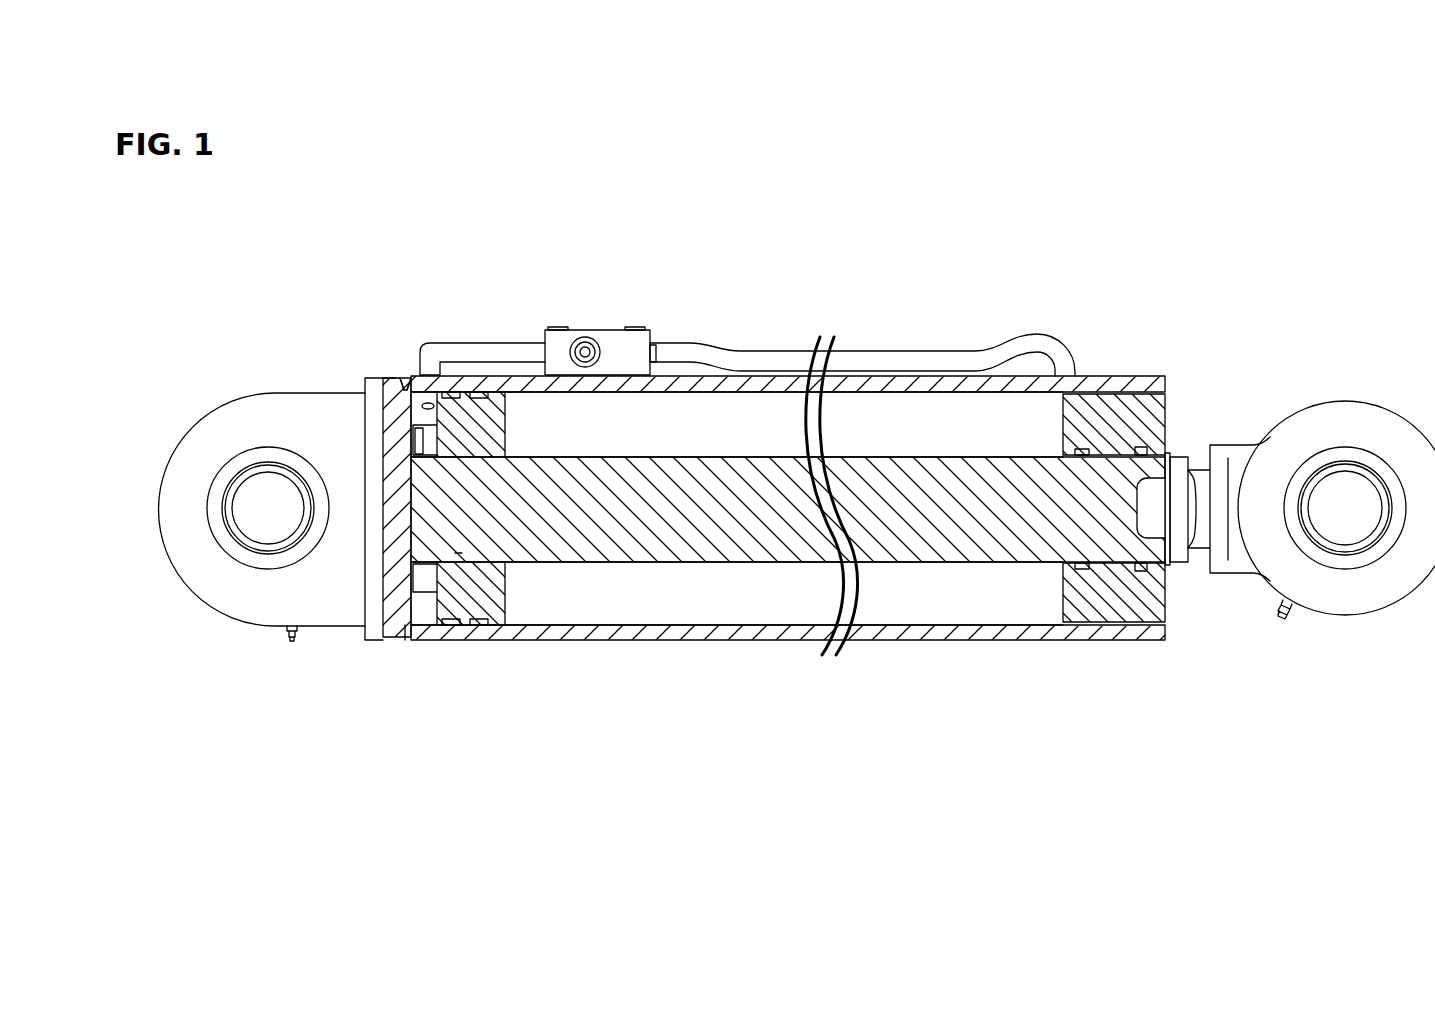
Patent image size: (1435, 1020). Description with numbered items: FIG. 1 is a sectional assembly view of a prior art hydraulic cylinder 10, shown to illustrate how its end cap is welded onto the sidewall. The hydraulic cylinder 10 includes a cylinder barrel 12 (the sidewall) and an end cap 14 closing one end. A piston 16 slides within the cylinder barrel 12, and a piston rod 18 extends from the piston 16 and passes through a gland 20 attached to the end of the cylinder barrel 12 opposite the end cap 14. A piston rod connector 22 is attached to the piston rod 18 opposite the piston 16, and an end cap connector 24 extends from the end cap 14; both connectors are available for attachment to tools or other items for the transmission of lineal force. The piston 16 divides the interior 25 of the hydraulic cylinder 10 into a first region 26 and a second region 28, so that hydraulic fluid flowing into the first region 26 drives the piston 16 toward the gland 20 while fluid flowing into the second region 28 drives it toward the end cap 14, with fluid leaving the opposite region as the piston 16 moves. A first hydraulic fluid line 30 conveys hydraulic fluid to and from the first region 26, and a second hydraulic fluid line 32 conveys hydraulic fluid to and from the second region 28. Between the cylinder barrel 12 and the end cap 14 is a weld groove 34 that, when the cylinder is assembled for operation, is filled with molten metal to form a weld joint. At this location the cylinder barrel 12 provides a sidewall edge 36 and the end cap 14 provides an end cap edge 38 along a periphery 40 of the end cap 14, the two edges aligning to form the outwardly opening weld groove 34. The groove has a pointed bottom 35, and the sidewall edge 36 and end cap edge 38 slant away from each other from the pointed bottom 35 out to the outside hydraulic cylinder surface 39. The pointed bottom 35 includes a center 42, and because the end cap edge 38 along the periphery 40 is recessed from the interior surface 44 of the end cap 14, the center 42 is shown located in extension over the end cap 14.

The hydraulic cylinder 10 is at (1162, 205).
The cylinder barrel 12 is at (888, 635).
The end cap 14 is at (390, 618).
The piston 16 is at (455, 610).
The piston rod 18 is at (690, 540).
The gland 20 is at (1137, 425).
The piston rod connector 22 is at (1350, 412).
The end cap connector 24 is at (183, 513).
The interior 25 is at (655, 412).
The first region 26 is at (425, 610).
The second region 28 is at (530, 605).
The first hydraulic fluid line 30 is at (483, 352).
The second hydraulic fluid line 32 is at (796, 362).
The weld groove 34 is at (401, 340).
The pointed bottom 35 is at (406, 640).
The sidewall edge 36 is at (407, 390).
The end cap edge 38 is at (400, 386).
The outside hydraulic cylinder surface 39 is at (490, 640).
The periphery 40 is at (396, 377).
The center 42 is at (404, 640).
The interior surface 44 is at (458, 553).